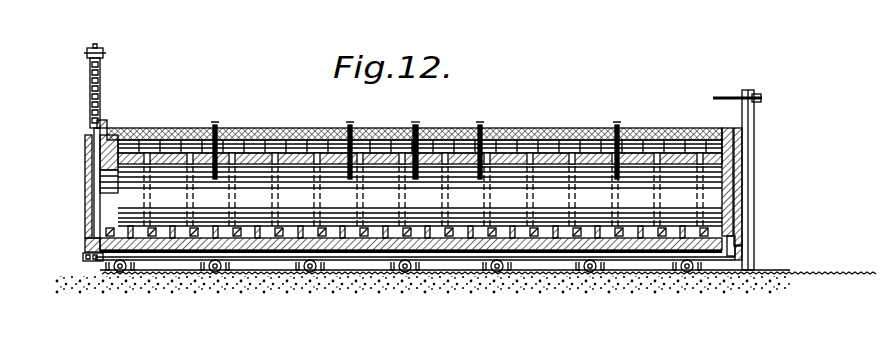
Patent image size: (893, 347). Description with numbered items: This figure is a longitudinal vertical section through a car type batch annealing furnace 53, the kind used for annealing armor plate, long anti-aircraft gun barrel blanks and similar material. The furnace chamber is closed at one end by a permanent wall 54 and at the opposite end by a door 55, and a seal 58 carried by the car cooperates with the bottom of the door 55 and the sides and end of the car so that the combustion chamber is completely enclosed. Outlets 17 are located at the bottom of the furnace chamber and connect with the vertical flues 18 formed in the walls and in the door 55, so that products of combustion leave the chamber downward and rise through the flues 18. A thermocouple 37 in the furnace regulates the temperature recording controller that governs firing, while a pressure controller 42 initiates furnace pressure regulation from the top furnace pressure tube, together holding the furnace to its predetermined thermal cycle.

The outlets 17 is at (97, 233).
The vertical flues 18 is at (86, 143).
The thermocouple 37 is at (215, 124).
The pressure controller 42 is at (432, 110).
The car type batch annealing furnace 53 is at (262, 128).
The permanent wall 54 is at (745, 183).
The door 55 is at (88, 197).
The seal 58 is at (95, 262).